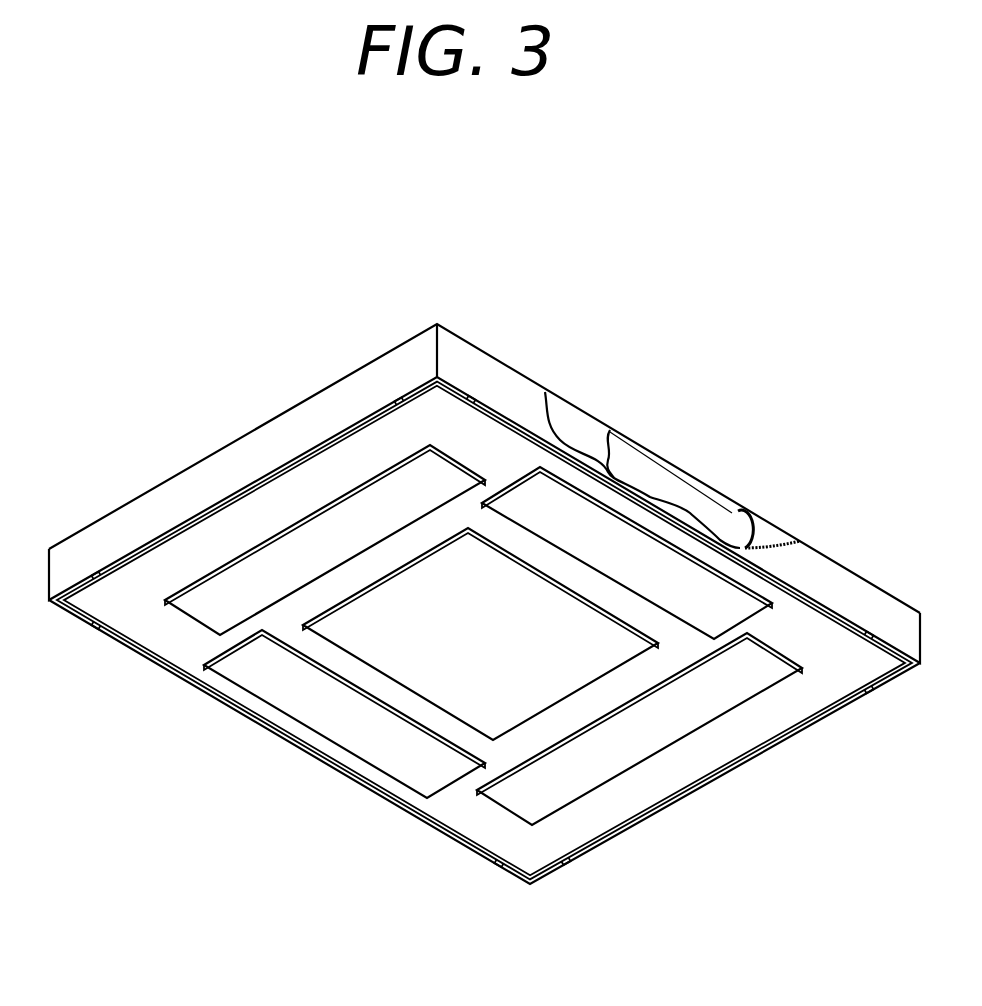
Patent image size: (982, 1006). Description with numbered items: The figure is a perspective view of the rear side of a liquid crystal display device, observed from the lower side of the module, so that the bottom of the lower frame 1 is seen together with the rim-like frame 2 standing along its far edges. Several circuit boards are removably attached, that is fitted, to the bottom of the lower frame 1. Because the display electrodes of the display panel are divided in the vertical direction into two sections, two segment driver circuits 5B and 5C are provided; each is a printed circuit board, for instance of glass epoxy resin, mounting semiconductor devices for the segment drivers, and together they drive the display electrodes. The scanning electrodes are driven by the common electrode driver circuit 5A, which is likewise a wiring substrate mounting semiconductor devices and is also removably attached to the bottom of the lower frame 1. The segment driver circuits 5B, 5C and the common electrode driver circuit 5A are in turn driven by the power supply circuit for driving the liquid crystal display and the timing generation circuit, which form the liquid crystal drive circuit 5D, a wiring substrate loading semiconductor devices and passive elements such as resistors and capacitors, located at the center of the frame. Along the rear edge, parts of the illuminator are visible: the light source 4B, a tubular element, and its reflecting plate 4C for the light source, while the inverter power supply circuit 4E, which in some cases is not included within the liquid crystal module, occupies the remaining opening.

The lower frame 1 is at (215, 540).
The frame 2 is at (323, 412).
The light source 4B is at (658, 473).
The reflecting plate for light source 4C is at (772, 533).
The inverter power supply circuit 4E is at (212, 603).
The common electrode driver circuit 5A is at (613, 750).
The segment driver circuit 5B is at (695, 613).
The segment driver circuit 5C is at (322, 710).
The liquid crystal drive circuit 5D is at (420, 683).